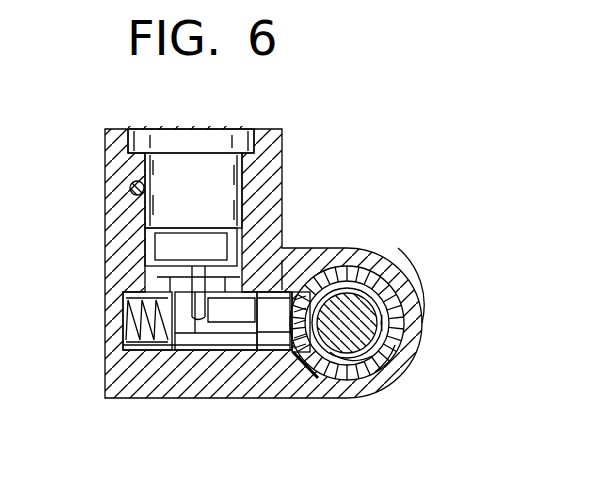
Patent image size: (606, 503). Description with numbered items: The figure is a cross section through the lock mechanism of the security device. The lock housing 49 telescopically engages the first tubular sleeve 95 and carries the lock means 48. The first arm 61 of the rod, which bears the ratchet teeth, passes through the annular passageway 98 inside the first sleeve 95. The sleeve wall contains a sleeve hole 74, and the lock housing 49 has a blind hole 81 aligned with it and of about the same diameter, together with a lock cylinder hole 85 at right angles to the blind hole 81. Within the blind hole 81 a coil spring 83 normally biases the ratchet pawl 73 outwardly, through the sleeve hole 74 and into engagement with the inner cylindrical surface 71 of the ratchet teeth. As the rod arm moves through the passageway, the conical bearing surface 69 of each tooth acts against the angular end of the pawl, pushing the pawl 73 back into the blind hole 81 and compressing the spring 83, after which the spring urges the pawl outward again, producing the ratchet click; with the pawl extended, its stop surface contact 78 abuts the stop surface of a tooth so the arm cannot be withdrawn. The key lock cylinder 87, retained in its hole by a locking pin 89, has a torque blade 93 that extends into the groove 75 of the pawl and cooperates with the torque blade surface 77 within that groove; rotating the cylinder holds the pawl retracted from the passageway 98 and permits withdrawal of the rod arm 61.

The lock means 48 is at (148, 132).
The lock housing 49 is at (286, 151).
The first arm 61 is at (412, 270).
The conical bearing surface 69 is at (372, 385).
The inner cylindrical surface 71 is at (398, 350).
The ratchet pawl 73 is at (296, 290).
The sleeve hole 74 is at (312, 362).
The groove 75 is at (240, 318).
The torque blade surface 77 is at (284, 276).
The stop surface contact 78 is at (335, 272).
The blind hole 81 is at (218, 346).
The coil spring 83 is at (142, 351).
The lock cylinder hole 85 is at (143, 247).
The key lock cylinder 87 is at (205, 165).
The locking pin 89 is at (130, 184).
The torque blade 93 is at (200, 341).
The first tubular sleeve 95 is at (397, 305).
The annular passageway 98 is at (400, 322).